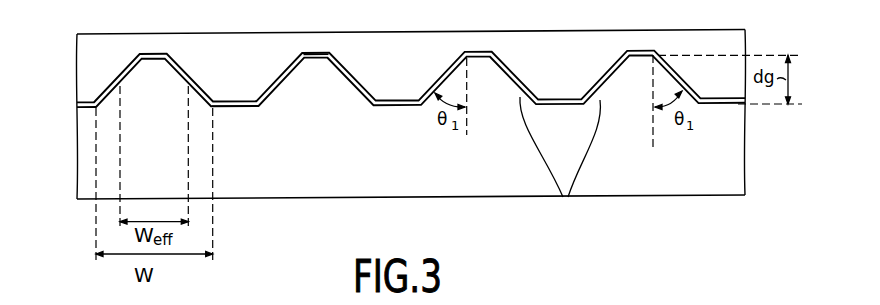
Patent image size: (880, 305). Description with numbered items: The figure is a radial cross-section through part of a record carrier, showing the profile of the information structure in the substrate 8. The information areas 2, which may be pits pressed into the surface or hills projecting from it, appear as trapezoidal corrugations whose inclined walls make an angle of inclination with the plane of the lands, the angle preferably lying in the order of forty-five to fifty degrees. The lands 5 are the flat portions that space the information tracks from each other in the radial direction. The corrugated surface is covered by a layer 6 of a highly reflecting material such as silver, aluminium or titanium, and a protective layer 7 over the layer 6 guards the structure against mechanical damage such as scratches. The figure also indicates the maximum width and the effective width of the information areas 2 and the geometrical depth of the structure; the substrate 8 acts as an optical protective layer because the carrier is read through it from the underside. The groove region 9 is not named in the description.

The information areas 2 is at (315, 59).
The lands 5 is at (237, 108).
The layer of highly reflecting material 6 is at (313, 52).
The protective layer 7 is at (550, 43).
The substrate 8 is at (715, 183).
The groove 9 is at (560, 162).